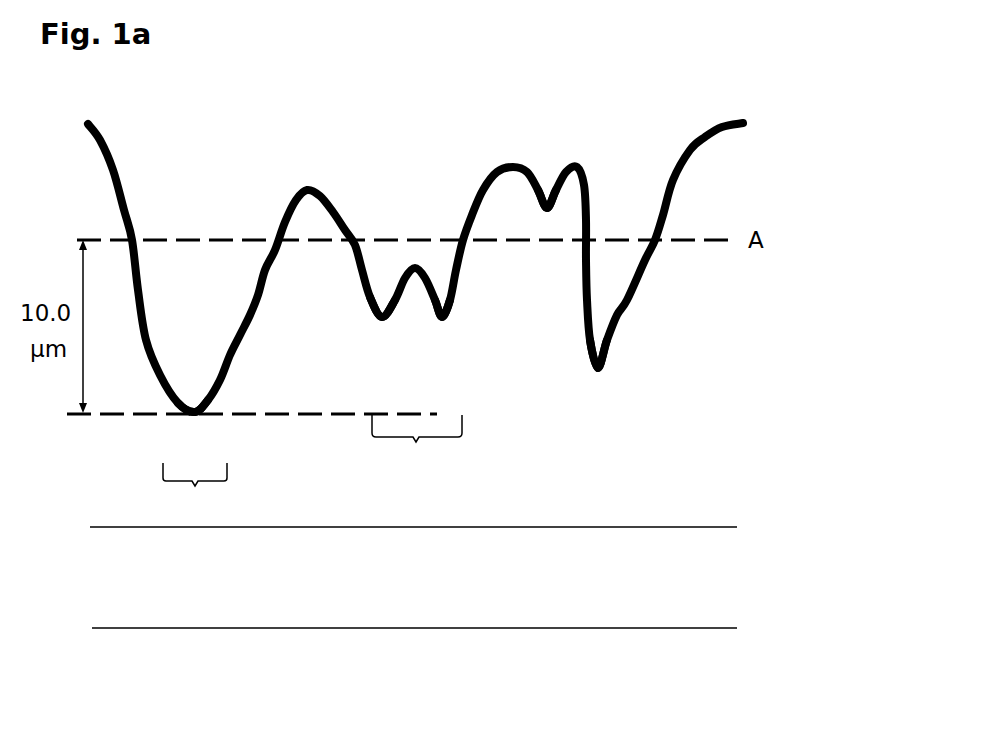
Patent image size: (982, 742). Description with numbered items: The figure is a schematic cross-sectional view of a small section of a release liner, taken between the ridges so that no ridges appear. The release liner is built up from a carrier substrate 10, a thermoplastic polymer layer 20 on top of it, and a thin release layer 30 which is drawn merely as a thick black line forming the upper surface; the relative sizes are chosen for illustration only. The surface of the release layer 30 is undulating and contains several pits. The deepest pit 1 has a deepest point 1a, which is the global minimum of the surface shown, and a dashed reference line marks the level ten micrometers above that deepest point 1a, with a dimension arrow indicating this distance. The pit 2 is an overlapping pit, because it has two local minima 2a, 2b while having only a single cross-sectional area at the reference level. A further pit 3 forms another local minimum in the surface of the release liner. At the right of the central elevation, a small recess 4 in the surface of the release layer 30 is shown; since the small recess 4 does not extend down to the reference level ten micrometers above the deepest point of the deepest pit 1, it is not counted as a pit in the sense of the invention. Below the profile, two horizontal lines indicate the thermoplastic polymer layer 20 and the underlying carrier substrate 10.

The deepest pit 1 is at (195, 486).
The deepest point of the deepest pit 1a is at (195, 416).
The overlapping pit 2 is at (416, 442).
The local minimum of overlapping pit 2a is at (382, 321).
The local minimum of overlapping pit 2b is at (442, 321).
The further pit 3 is at (598, 372).
The small recess 4 is at (546, 205).
The carrier substrate 10 is at (741, 587).
The thermoplastic polymer layer 20 is at (735, 382).
The release layer 30 is at (748, 138).